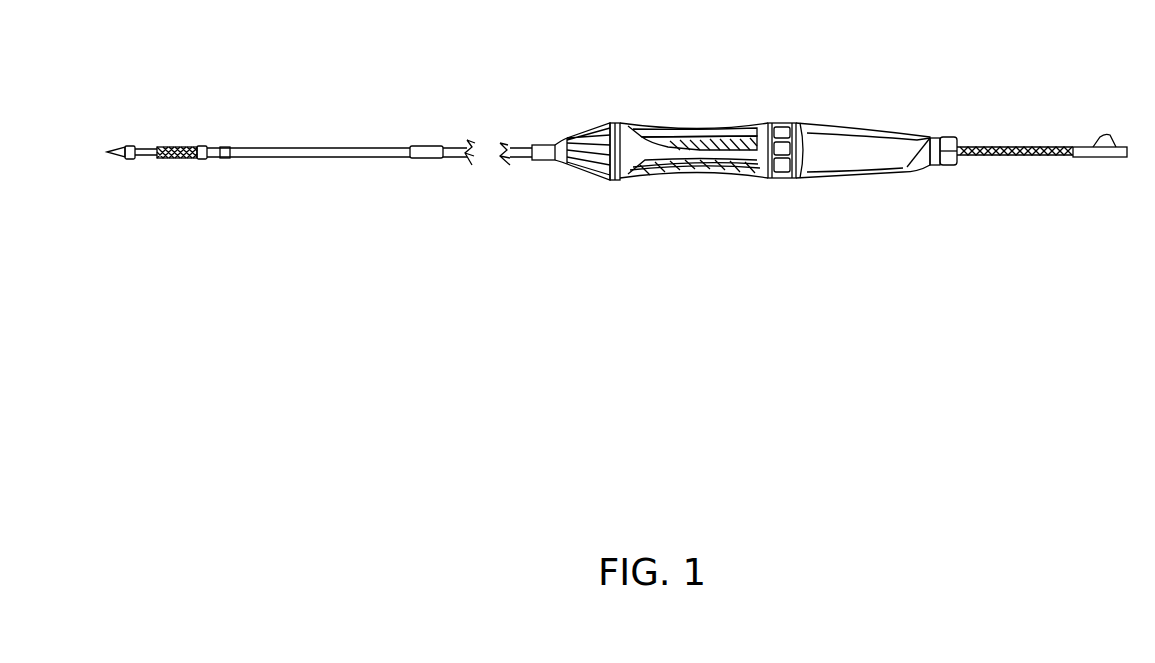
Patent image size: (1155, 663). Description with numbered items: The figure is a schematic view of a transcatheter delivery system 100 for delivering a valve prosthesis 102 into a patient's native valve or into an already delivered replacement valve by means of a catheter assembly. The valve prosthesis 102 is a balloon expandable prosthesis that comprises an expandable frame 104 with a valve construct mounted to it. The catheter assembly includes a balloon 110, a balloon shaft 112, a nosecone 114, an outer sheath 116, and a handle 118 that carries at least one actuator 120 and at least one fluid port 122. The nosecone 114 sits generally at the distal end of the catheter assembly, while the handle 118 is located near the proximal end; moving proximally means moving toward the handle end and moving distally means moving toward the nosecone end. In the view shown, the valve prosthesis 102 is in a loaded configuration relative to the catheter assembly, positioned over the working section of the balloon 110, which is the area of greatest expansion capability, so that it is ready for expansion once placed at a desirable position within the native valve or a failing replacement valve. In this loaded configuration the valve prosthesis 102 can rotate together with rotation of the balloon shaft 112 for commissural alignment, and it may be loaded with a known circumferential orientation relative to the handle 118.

The transcatheter delivery system 100 is at (749, 66).
The valve prosthesis 102 is at (178, 158).
The expandable frame 104 is at (180, 146).
The balloon 110 is at (155, 158).
The balloon shaft 112 is at (138, 146).
The nosecone 114 is at (122, 158).
The outer sheath 116 is at (330, 147).
The handle 118 is at (694, 180).
The actuator 120 is at (595, 178).
The fluid port 122 is at (1105, 134).